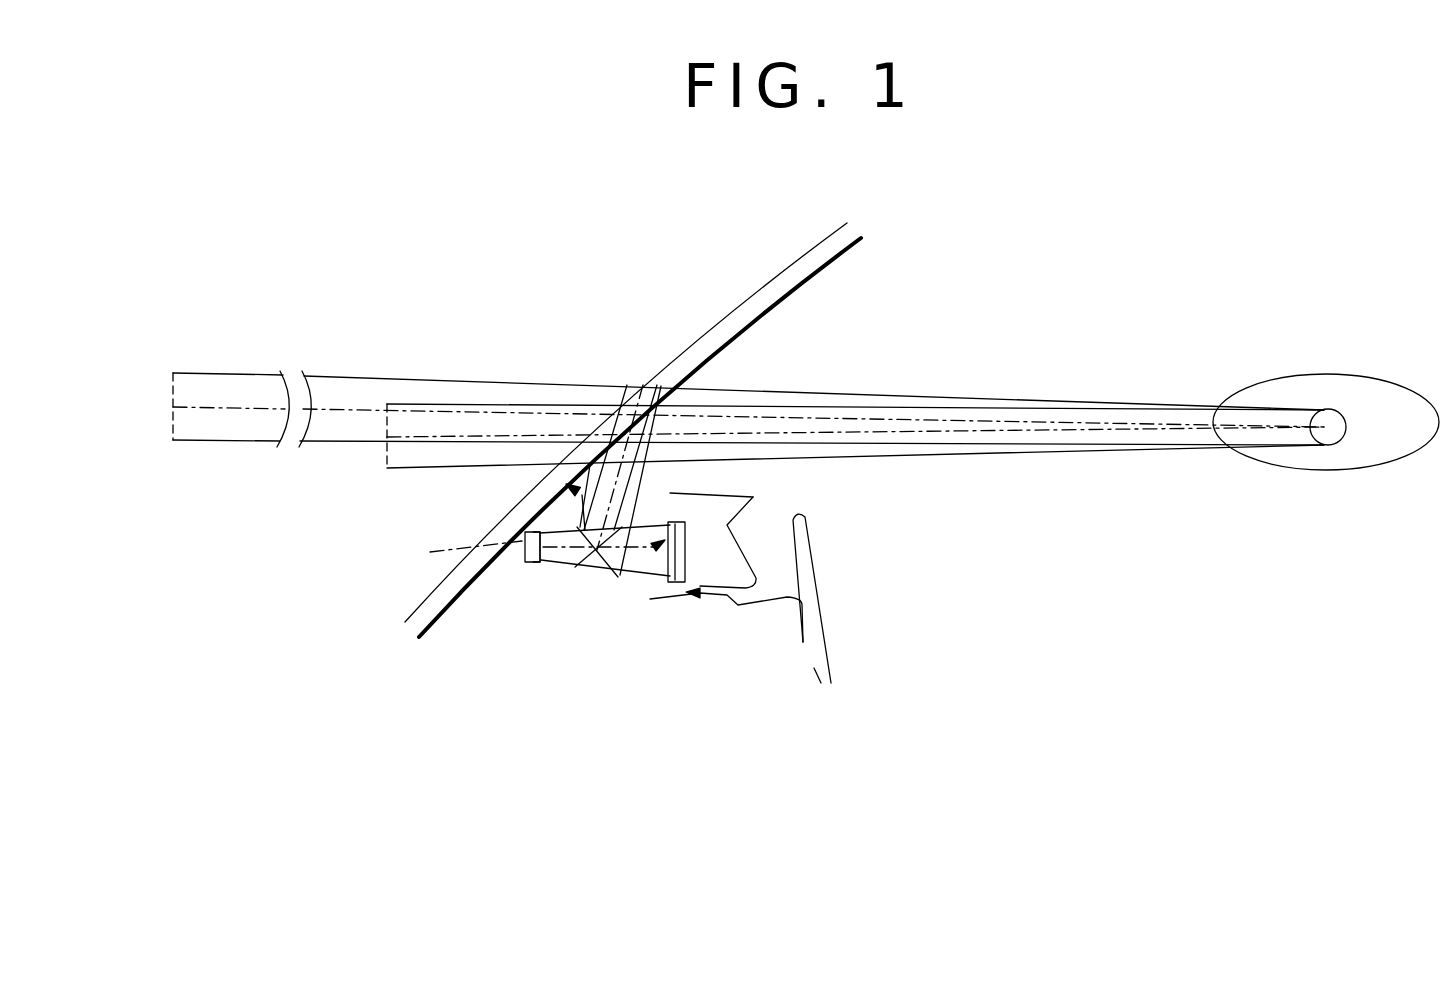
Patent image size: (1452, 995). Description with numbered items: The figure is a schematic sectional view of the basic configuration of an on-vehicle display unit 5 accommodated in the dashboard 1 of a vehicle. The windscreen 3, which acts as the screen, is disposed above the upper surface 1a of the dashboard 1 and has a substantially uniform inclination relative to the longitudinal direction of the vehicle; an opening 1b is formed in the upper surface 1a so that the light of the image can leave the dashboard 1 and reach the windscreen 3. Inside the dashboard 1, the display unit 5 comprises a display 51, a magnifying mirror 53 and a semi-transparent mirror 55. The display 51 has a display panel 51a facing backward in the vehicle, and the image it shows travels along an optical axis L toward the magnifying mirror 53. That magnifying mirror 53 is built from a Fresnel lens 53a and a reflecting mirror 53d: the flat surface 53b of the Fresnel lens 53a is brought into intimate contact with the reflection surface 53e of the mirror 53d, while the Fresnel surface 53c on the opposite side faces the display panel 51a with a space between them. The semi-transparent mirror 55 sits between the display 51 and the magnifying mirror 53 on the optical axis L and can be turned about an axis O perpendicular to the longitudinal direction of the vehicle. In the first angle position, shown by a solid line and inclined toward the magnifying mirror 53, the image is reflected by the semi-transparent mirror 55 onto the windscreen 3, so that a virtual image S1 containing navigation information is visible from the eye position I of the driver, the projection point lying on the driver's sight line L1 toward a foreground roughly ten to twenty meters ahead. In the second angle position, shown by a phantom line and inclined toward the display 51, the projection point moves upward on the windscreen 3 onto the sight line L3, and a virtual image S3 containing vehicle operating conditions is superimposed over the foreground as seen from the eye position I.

The dashboard 1 is at (757, 496).
The upper surface 1a is at (670, 493).
The opening 1b is at (568, 488).
The windscreen 3 is at (763, 289).
The on-vehicle display unit 5 is at (539, 620).
The display 51 is at (525, 563).
The display panel 51a is at (540, 565).
The magnifying mirror 53 is at (768, 645).
The Fresnel lens 53a is at (640, 578).
The flat surface 53b is at (757, 585).
The Fresnel surface 53c is at (657, 576).
The reflecting mirror 53d is at (745, 535).
The reflection surface 53e is at (668, 583).
The semi-transparent mirror 55 is at (535, 531).
The optical axis L is at (534, 557).
The axis O is at (583, 568).
The eye position I is at (1337, 445).
The virtual image S1 is at (386, 452).
The virtual image S3 is at (172, 423).
The sight line L1 is at (958, 431).
The sight line L3 is at (499, 413).